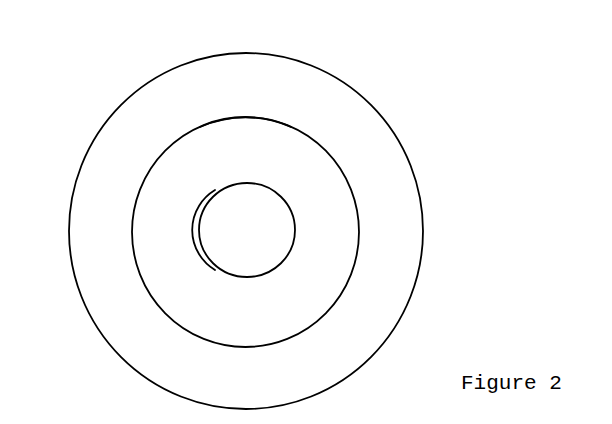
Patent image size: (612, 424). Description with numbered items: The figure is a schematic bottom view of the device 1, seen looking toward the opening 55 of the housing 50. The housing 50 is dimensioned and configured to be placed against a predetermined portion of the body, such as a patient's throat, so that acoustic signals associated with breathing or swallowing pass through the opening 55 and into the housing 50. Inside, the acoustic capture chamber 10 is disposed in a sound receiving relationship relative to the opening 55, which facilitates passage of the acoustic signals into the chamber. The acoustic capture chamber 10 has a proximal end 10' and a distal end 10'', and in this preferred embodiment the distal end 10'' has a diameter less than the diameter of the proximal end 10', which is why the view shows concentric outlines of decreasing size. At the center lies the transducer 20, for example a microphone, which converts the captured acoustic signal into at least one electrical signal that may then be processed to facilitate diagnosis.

The device 1 is at (578, 248).
The acoustic capture chamber 10 is at (312, 232).
The proximal end 10' is at (245, 63).
The distal end 10'' is at (125, 176).
The transducer 20 is at (268, 232).
The housing 50 is at (376, 160).
The opening 55 is at (596, 0).